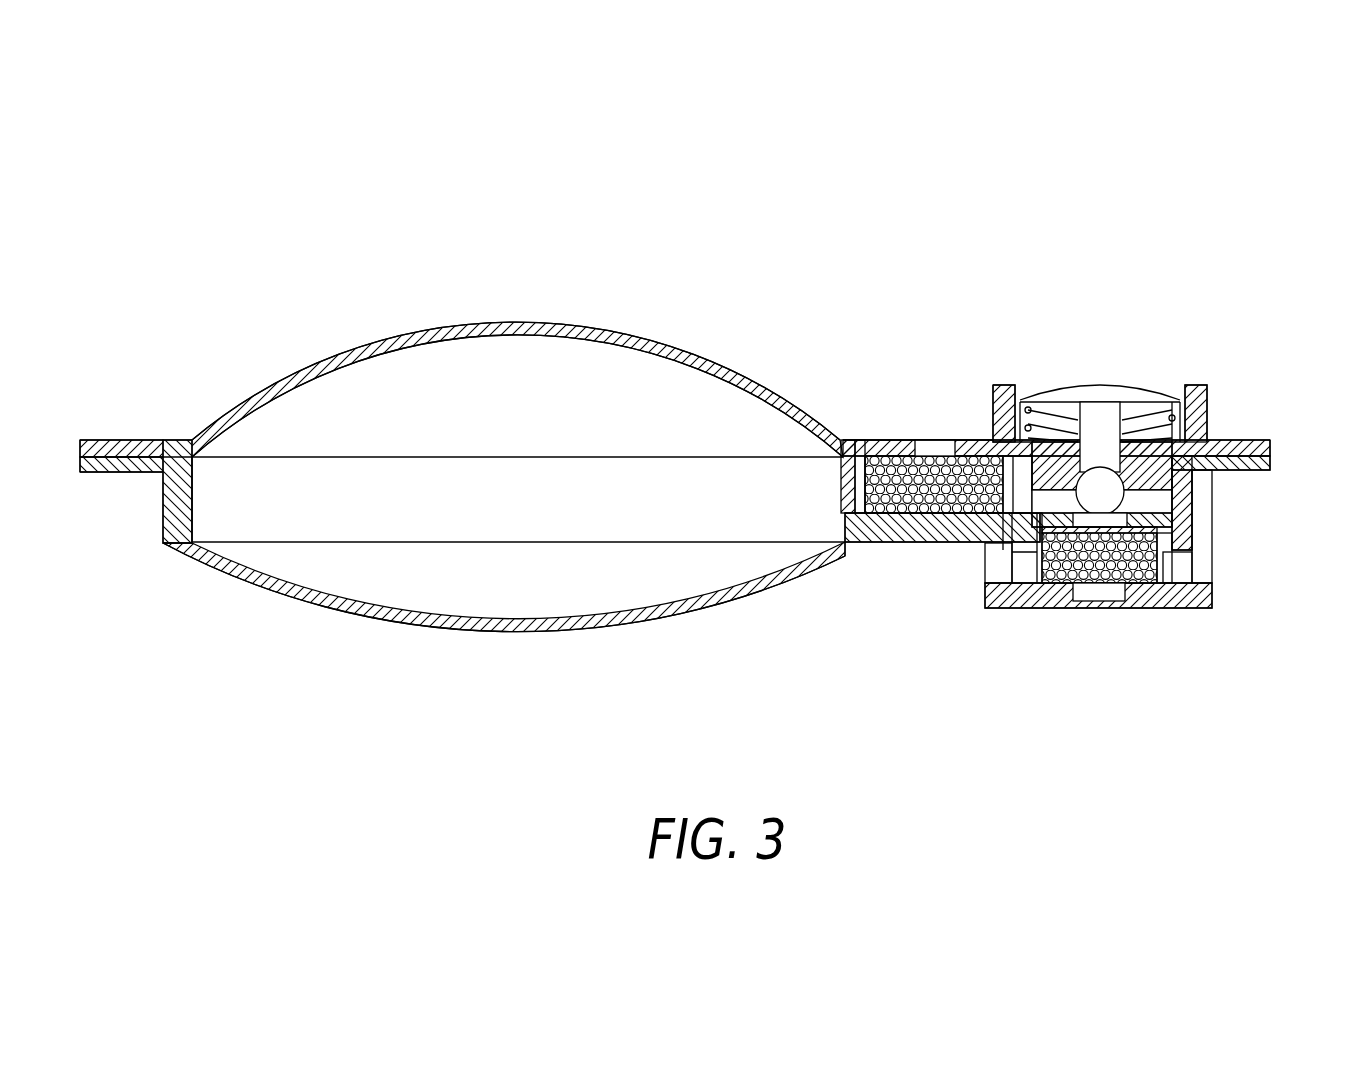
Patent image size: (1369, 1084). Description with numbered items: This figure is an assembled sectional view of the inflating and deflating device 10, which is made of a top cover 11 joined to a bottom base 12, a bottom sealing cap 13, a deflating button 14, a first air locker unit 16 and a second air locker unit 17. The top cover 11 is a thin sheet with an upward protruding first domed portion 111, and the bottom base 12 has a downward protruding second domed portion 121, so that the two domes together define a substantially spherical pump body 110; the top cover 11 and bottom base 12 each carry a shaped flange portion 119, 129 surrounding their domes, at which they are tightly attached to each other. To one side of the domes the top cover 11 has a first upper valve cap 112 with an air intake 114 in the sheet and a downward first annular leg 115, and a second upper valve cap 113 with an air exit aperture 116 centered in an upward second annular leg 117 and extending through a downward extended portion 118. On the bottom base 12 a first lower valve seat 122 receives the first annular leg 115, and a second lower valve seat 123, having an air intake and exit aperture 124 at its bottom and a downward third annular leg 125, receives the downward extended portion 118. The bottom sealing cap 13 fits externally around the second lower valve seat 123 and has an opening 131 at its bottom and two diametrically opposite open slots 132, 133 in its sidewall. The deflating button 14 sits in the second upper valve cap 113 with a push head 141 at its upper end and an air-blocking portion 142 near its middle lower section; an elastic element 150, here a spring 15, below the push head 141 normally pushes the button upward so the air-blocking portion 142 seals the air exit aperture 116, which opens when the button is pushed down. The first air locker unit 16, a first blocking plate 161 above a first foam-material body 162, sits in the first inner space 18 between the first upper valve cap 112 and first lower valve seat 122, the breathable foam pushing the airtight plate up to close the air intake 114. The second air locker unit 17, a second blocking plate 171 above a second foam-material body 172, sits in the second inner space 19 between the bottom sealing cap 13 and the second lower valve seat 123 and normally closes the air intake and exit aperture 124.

The inflating and deflating device 10 is at (358, 312).
The top cover 11 is at (578, 318).
The pump body 110 is at (255, 388).
The first domed portion 111 is at (325, 362).
The first upper valve cap 112 is at (897, 438).
The second upper valve cap 113 is at (1200, 388).
The air intake 114 is at (935, 452).
The first annular leg 115 is at (850, 518).
The air exit aperture 116 is at (1215, 478).
The second annular leg 117 is at (1232, 442).
The downward extended portion 118 is at (1185, 512).
The shaped flange portion 119 is at (150, 440).
The bottom base 12 is at (555, 640).
The second domed portion 121 is at (332, 608).
The first lower valve seat 122 is at (885, 548).
The second lower valve seat 123 is at (1003, 550).
The air intake and exit aperture 124 is at (1160, 518).
The third annular leg 125 is at (1023, 595).
The shaped flange portion 129 is at (106, 472).
The bottom sealing cap 13 is at (1215, 606).
The opening 131 is at (1090, 608).
The open slot 132 is at (985, 575).
The open slot 133 is at (1220, 590).
The deflating button 14 is at (1130, 380).
The push head 141 is at (1075, 395).
The air-blocking portion 142 is at (1082, 478).
The spring 15 is at (1185, 418).
The elastic element 150 is at (1162, 402).
The first air locker unit 16 is at (872, 456).
The first blocking plate 161 is at (865, 472).
The first foam-material body 162 is at (865, 495).
The second air locker unit 17 is at (1105, 592).
The second blocking plate 171 is at (1150, 530).
The second foam-material body 172 is at (1145, 560).
The first inner space 18 is at (865, 482).
The second inner space 19 is at (1195, 565).